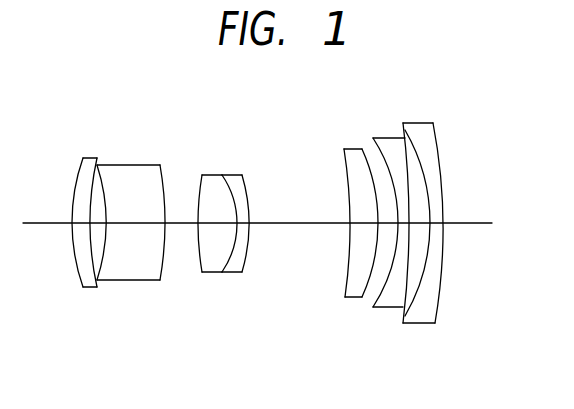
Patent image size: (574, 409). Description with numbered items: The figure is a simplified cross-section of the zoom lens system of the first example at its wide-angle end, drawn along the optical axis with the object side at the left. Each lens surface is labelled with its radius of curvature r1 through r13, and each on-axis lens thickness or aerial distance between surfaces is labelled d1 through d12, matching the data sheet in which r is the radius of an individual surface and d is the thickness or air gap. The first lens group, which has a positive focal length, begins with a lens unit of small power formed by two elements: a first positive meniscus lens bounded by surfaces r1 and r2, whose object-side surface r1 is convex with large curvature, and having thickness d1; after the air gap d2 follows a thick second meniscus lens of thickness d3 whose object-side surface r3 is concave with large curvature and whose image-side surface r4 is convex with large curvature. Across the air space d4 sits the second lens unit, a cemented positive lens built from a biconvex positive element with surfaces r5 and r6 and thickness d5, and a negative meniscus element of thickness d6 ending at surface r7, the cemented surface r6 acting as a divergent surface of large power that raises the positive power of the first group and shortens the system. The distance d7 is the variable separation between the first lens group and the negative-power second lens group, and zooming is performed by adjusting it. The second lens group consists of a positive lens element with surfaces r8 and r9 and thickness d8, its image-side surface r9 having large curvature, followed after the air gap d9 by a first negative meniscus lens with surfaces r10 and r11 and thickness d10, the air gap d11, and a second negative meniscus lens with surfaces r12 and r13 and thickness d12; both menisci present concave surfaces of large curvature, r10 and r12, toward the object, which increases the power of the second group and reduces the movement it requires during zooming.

The radius of curvature of first lens surface r1 is at (82, 168).
The radius of curvature of second lens surface r2 is at (94, 158).
The radius of curvature of third lens surface r3 is at (101, 167).
The radius of curvature of fourth lens surface r4 is at (163, 166).
The radius of curvature of fifth lens surface r5 is at (201, 177).
The radius of curvature of sixth lens surface r6 is at (227, 182).
The radius of curvature of seventh lens surface r7 is at (245, 180).
The radius of curvature of eighth lens surface r8 is at (347, 172).
The radius of curvature of ninth lens surface r9 is at (364, 153).
The radius of curvature of tenth lens surface r10 is at (379, 150).
The radius of curvature of eleventh lens surface r11 is at (406, 146).
The radius of curvature of twelfth lens surface r12 is at (415, 152).
The radius of curvature of thirteenth lens surface r13 is at (438, 145).
The lens thickness of first lens element d1 is at (80, 224).
The aerial distance between second and third surfaces d2 is at (97, 224).
The lens thickness of second lens element d3 is at (135, 224).
The aerial distance between fourth and fifth surfaces d4 is at (180, 224).
The lens thickness of biconvex positive lens element d5 is at (217, 224).
The lens thickness of negative meniscus lens element d6 is at (243, 224).
The aerial distance between first and second lens groups d7 is at (302, 224).
The lens thickness of positive lens element of second group d8 is at (364, 224).
The aerial distance between ninth and tenth surfaces d9 is at (388, 224).
The lens thickness of first negative meniscus lens element d10 is at (403, 224).
The aerial distance between eleventh and twelfth surfaces d11 is at (419, 224).
The lens thickness of second negative meniscus lens element d12 is at (437, 224).